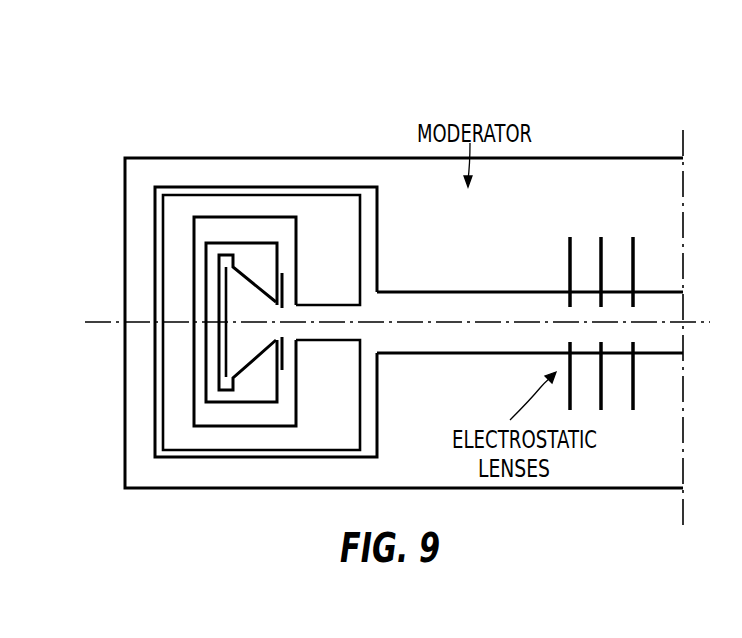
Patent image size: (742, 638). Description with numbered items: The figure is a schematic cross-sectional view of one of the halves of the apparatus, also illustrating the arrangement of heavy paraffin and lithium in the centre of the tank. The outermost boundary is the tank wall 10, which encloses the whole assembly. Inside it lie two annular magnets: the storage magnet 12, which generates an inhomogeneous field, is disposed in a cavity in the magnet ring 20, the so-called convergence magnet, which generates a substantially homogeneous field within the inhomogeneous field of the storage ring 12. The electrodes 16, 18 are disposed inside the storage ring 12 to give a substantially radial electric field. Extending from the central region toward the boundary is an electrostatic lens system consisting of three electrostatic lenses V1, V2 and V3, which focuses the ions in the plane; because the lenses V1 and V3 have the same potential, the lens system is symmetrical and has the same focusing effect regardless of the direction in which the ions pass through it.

The tank wall 10 is at (205, 158).
The storage magnet 12 is at (258, 403).
The electrode 16 is at (228, 282).
The electrode 18 is at (288, 282).
The magnet ring 20 is at (333, 352).
The electrostatic lens V1 is at (568, 256).
The electrostatic lens V2 is at (599, 253).
The electrostatic lens V3 is at (635, 258).